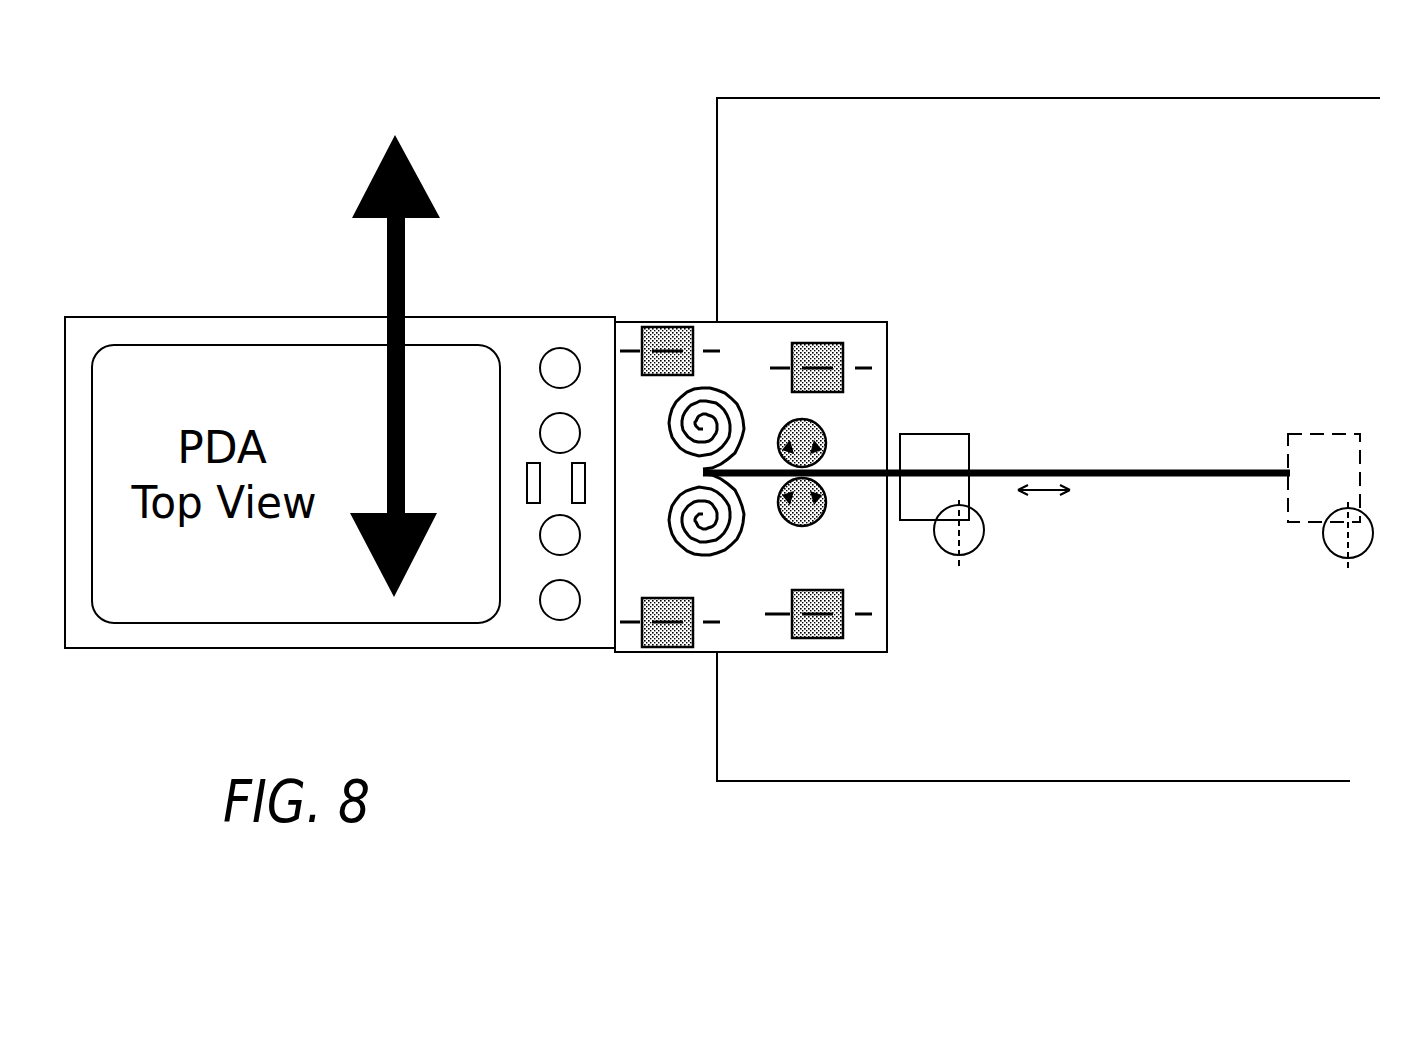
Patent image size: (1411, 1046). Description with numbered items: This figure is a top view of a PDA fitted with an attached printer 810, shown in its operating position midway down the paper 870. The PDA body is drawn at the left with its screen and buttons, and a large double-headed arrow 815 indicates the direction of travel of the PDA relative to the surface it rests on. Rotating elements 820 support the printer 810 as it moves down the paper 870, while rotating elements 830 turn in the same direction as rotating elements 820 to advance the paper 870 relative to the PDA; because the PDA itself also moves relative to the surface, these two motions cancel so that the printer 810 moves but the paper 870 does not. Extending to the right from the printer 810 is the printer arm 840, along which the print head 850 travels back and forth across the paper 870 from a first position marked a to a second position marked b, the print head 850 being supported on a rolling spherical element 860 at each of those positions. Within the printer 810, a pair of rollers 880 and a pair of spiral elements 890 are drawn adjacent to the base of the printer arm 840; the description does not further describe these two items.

The printer 810 is at (760, 655).
The PDA insertion/removal direction arrow 815 is at (386, 292).
The rotating elements 820 is at (665, 322).
The rotating elements 830 is at (820, 338).
The printer arm 840 is at (1143, 468).
The print head 850 is at (940, 434).
The rolling spherical element 860 is at (978, 552).
The paper 870 is at (716, 195).
The feed rollers 880 is at (812, 525).
The spiral springs/ribbon spools 890 is at (727, 397).